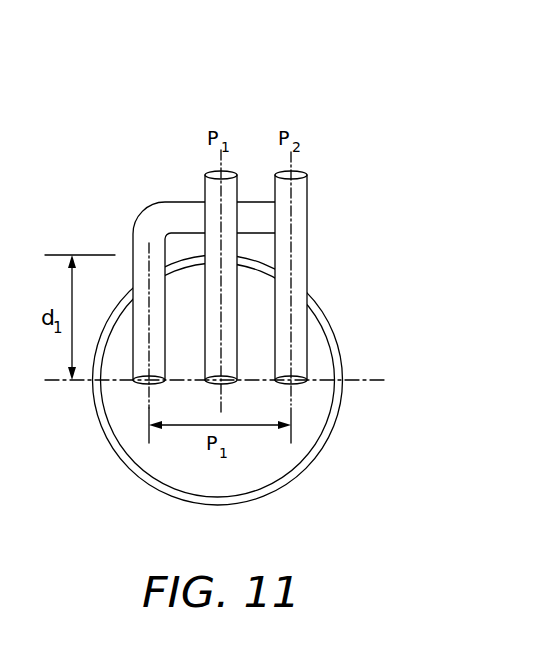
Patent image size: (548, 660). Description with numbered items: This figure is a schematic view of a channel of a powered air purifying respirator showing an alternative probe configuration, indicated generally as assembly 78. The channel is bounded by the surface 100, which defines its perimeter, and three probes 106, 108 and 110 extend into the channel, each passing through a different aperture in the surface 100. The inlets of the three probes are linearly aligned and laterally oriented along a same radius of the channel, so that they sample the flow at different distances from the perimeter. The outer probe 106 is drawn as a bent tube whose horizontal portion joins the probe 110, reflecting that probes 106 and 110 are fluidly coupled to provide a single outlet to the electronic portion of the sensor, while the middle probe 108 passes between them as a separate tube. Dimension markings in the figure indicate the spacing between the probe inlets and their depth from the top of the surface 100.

The tube assembly 78 is at (258, 109).
The surface 100 is at (330, 406).
The probe 106 is at (133, 229).
The probe 108 is at (205, 179).
The probe 110 is at (307, 205).